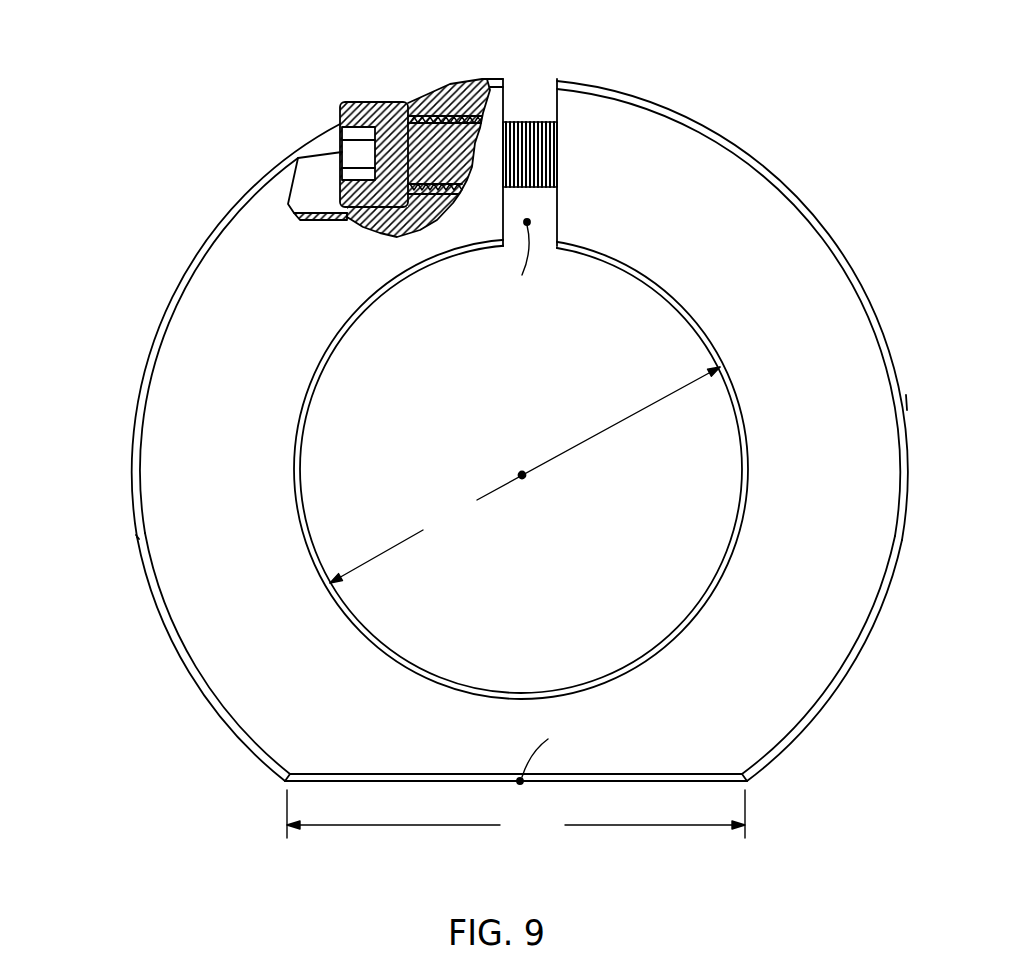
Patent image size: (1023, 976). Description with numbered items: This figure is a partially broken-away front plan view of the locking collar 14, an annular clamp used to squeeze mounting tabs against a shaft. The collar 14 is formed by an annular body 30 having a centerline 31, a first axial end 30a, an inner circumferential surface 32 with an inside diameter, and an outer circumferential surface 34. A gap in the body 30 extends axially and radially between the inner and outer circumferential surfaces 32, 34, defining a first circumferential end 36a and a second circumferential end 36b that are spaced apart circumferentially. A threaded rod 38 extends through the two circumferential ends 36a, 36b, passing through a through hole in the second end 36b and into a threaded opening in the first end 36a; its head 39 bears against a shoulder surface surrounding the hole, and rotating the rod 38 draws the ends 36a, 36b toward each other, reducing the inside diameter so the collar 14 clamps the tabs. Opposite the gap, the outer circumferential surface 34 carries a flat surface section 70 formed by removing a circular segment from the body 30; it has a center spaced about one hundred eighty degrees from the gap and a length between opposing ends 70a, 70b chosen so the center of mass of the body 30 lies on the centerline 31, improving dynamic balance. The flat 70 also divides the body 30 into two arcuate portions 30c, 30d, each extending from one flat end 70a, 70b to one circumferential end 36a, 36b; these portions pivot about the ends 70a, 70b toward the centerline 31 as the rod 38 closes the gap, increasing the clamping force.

The locking collar 14 is at (150, 220).
The annular body 30 is at (140, 387).
The first axial end 30a is at (218, 662).
The first arcuate portion 30c is at (138, 537).
The second arcuate portion 30d is at (898, 567).
The centerline 31 is at (523, 478).
The inner circumferential surface 32 is at (318, 396).
The outer circumferential surface 34 is at (906, 403).
The first circumferential end 36a is at (568, 92).
The second circumferential end 36b is at (498, 78).
The threaded rod 38 is at (557, 148).
The head 39 is at (372, 102).
The flat surface section 70 is at (628, 782).
The first end of flat surface section 70a is at (286, 780).
The second end of flat surface section 70b is at (748, 769).